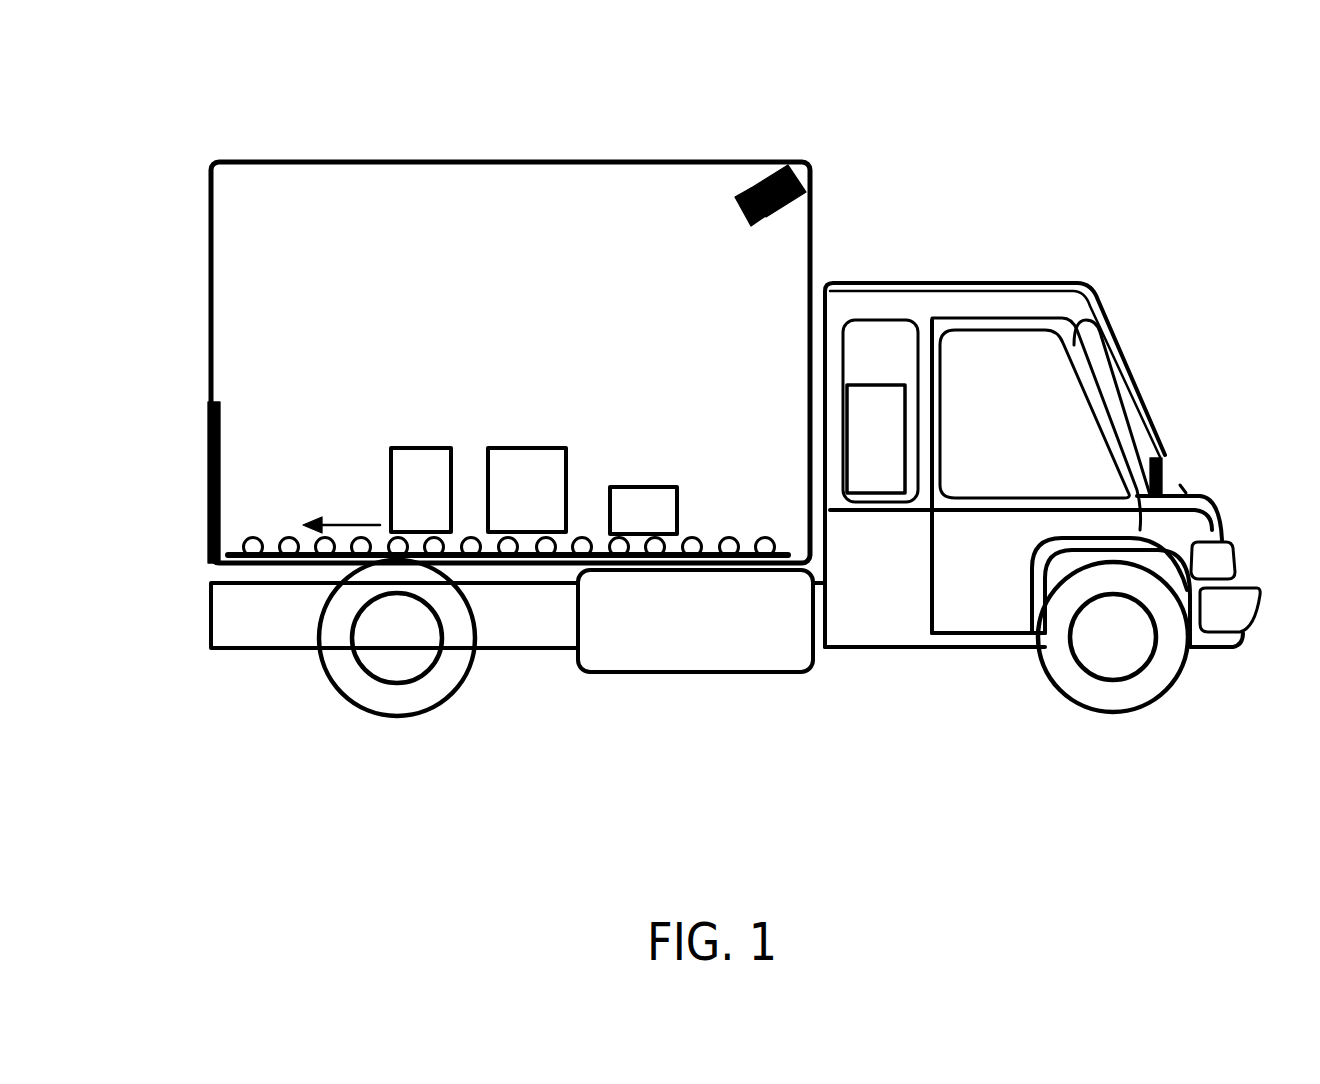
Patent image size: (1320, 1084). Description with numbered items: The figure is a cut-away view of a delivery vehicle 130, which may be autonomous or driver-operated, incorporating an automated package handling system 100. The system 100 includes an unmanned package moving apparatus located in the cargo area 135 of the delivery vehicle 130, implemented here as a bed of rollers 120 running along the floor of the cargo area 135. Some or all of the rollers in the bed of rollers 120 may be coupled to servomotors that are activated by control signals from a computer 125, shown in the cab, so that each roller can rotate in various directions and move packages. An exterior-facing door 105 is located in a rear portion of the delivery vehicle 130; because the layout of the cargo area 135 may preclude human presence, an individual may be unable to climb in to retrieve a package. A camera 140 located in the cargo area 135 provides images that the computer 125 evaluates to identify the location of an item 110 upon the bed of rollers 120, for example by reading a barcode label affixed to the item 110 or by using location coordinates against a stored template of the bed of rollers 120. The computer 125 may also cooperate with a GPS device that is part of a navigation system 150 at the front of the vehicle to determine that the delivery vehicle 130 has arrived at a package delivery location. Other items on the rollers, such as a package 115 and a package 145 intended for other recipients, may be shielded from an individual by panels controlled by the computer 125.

The automated package handling system 100 is at (1150, 117).
The exterior-facing door 105 is at (208, 476).
The item 110 is at (442, 503).
The package 115 is at (544, 503).
The bed of rollers 120 is at (757, 529).
The computer 125 is at (895, 458).
The delivery vehicle 130 is at (813, 228).
The cargo area 135 is at (510, 338).
The camera 140 is at (787, 200).
The package 145 is at (659, 526).
The navigation system 150 is at (1166, 477).